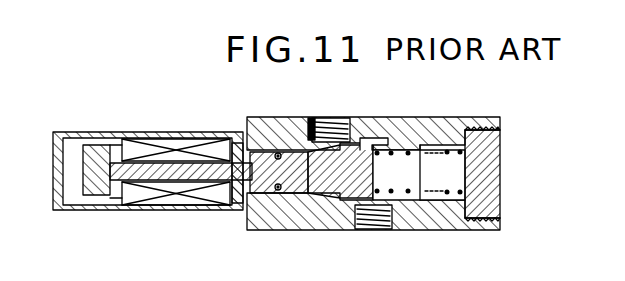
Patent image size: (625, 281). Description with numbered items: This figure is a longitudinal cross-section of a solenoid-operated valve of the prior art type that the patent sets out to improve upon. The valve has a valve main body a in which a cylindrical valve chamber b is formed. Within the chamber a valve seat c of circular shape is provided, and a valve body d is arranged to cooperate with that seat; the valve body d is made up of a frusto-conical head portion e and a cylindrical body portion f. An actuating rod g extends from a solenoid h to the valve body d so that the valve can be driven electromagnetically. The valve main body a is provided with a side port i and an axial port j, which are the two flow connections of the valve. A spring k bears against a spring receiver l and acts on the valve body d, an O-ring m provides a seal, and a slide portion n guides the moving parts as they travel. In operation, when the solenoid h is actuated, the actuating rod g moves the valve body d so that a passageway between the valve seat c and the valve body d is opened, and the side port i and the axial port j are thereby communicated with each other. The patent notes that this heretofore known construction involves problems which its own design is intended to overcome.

The valve main body a is at (375, 118).
The valve chamber b is at (432, 182).
The valve seat c is at (340, 229).
The valve body d is at (405, 229).
The frusto-conical head portion e is at (352, 118).
The cylindrical body portion f is at (393, 142).
The actuating rod g is at (306, 229).
The solenoid h is at (175, 131).
The side port i is at (374, 229).
The axial port j is at (315, 118).
The spring k is at (470, 118).
The spring receiver l is at (485, 155).
The O-ring m is at (262, 229).
The slide portion n is at (283, 229).